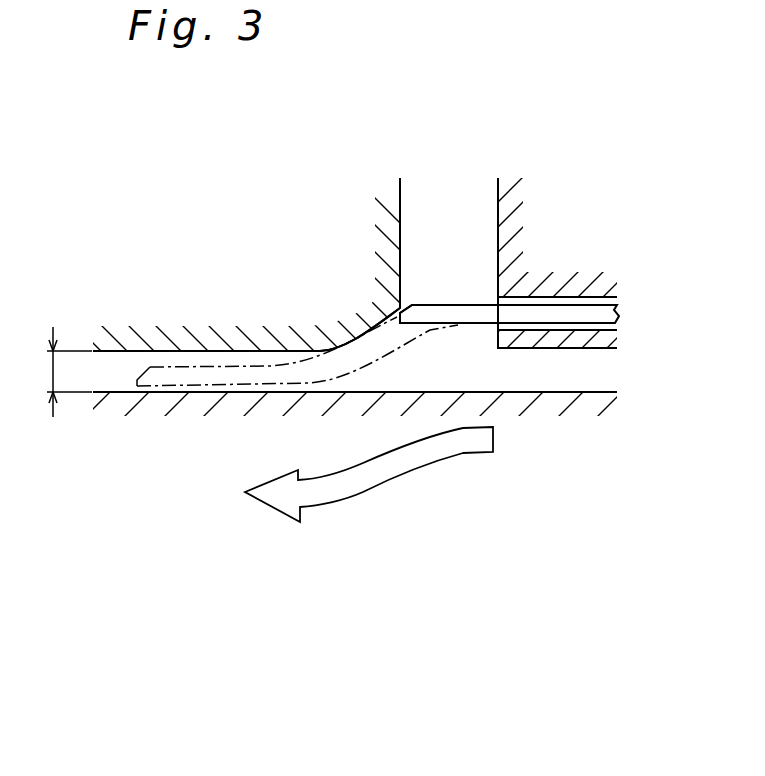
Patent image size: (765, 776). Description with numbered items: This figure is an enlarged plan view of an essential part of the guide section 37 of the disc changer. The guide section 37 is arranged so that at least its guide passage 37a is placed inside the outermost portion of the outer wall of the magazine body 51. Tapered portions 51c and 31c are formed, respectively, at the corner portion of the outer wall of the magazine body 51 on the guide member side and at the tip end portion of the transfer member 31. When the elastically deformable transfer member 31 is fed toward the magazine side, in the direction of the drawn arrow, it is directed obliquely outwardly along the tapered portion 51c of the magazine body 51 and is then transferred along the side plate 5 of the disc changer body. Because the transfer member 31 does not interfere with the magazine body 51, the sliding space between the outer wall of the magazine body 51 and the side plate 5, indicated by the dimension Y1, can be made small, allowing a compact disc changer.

The side plate 5 is at (345, 394).
The transfer member 31 is at (480, 317).
The tapered portion 31c is at (402, 308).
The guide section 37 is at (497, 235).
The guide passage 37a is at (555, 298).
The magazine body 51 is at (402, 235).
The tapered portion 51c is at (360, 335).
The dimension Y1 is at (51, 372).